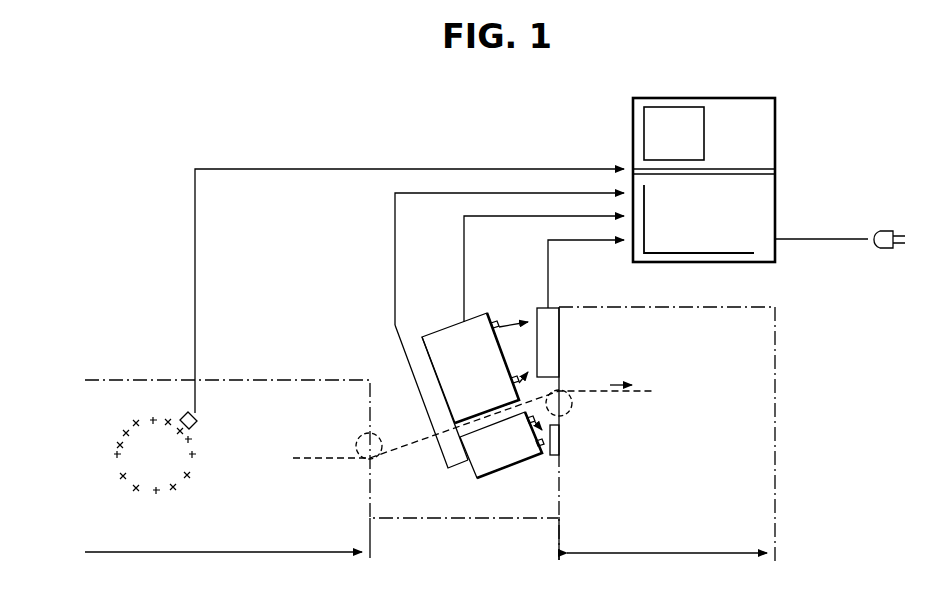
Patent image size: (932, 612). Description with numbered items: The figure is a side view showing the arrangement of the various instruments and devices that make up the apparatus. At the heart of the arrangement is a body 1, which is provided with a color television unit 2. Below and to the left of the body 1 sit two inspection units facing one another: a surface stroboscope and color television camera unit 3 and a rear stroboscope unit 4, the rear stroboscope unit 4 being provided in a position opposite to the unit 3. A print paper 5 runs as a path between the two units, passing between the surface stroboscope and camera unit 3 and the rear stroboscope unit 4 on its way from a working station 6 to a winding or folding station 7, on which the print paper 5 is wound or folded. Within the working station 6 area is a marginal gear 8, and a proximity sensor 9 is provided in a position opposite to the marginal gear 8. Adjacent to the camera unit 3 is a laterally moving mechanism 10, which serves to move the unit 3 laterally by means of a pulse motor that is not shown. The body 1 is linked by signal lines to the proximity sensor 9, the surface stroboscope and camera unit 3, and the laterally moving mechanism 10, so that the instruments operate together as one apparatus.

The body 1 is at (776, 206).
The color television unit 2 is at (680, 111).
The surface stroboscope and color television camera unit 3 is at (446, 338).
The rear stroboscope unit 4 is at (517, 458).
The print paper 5 is at (402, 445).
The working station 6 is at (305, 380).
The winding or folding station 7 is at (770, 401).
The marginal gear 8 is at (180, 475).
The proximity sensor 9 is at (198, 422).
The laterally moving mechanism 10 is at (540, 318).